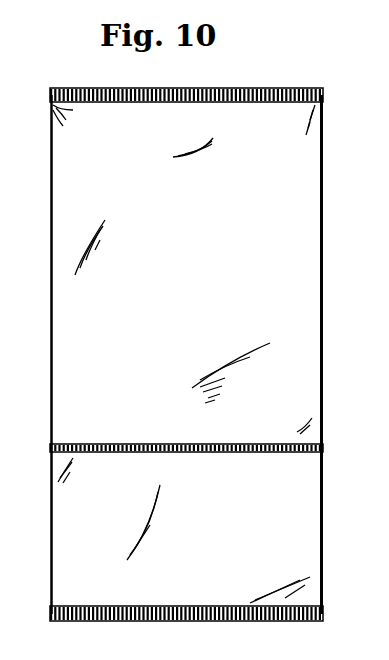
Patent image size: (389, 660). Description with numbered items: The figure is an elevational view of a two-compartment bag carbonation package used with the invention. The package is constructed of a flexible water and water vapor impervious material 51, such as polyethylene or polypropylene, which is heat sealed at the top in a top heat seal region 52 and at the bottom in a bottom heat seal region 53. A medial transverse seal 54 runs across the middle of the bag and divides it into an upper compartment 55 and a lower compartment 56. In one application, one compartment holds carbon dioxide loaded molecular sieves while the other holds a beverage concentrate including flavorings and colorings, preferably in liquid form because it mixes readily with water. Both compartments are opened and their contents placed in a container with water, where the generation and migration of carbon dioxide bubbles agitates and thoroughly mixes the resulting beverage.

The flexible water and water vapor impervious material 51 is at (307, 289).
The top heat seal region 52 is at (299, 88).
The bottom heat seal region 53 is at (265, 621).
The medial transverse seal 54 is at (322, 447).
The compartment 55 is at (195, 282).
The compartment 56 is at (227, 540).